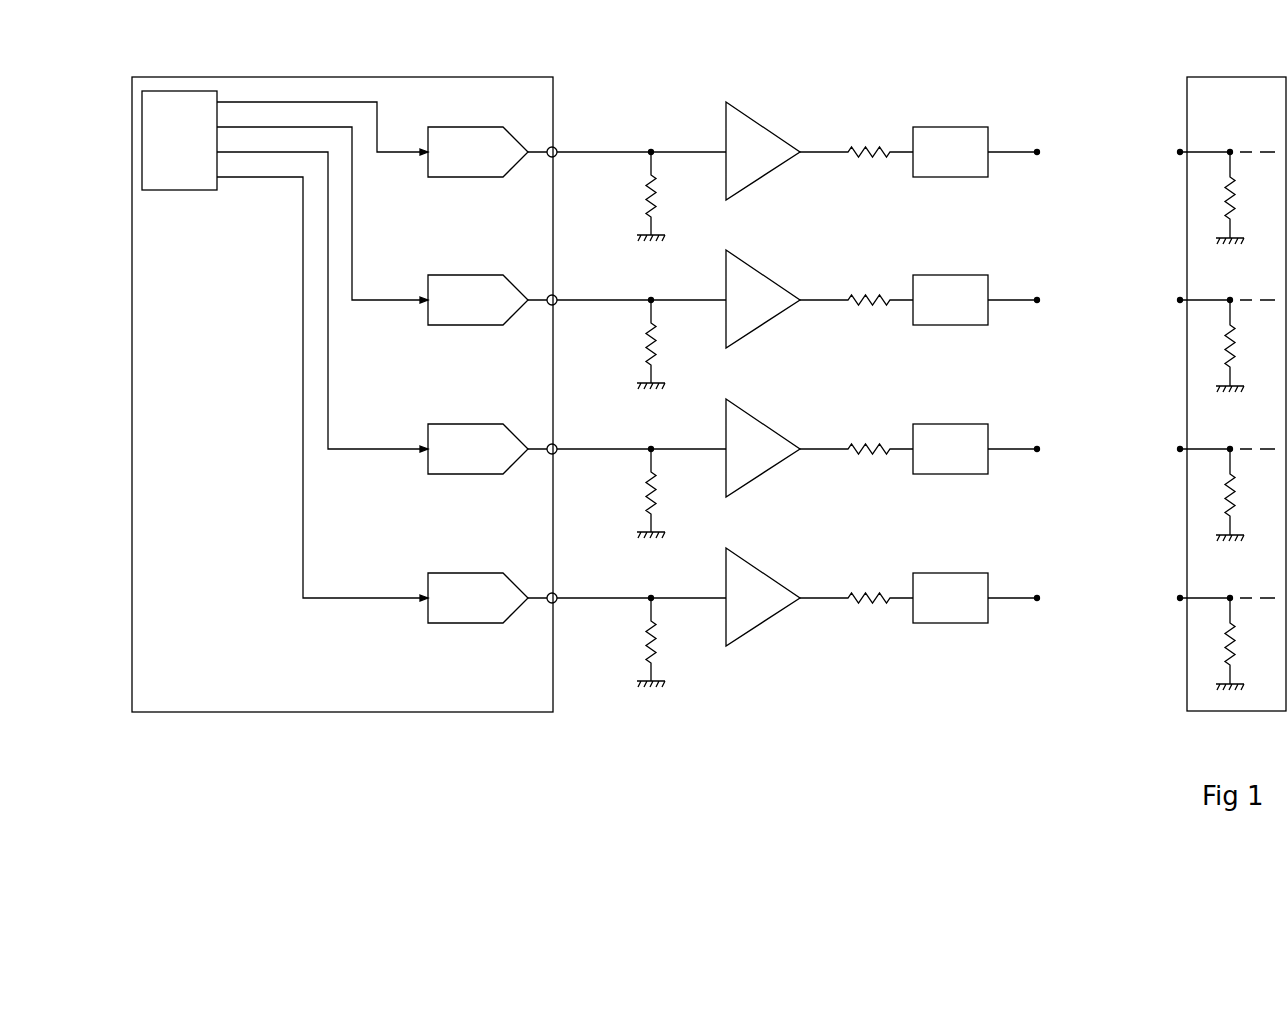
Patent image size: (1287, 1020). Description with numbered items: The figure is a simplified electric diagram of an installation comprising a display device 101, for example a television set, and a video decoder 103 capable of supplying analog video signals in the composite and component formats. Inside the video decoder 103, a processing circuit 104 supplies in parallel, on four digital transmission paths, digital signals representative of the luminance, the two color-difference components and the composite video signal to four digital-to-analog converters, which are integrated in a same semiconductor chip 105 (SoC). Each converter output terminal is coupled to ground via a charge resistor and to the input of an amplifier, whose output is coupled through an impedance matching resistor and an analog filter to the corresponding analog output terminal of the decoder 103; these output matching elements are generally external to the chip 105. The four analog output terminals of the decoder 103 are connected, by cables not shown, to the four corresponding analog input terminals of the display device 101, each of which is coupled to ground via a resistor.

The display device 101 is at (1227, 712).
The video decoder 103 is at (1087, 748).
The processing circuit 104 is at (179, 140).
The semiconductor chip 105 is at (403, 77).